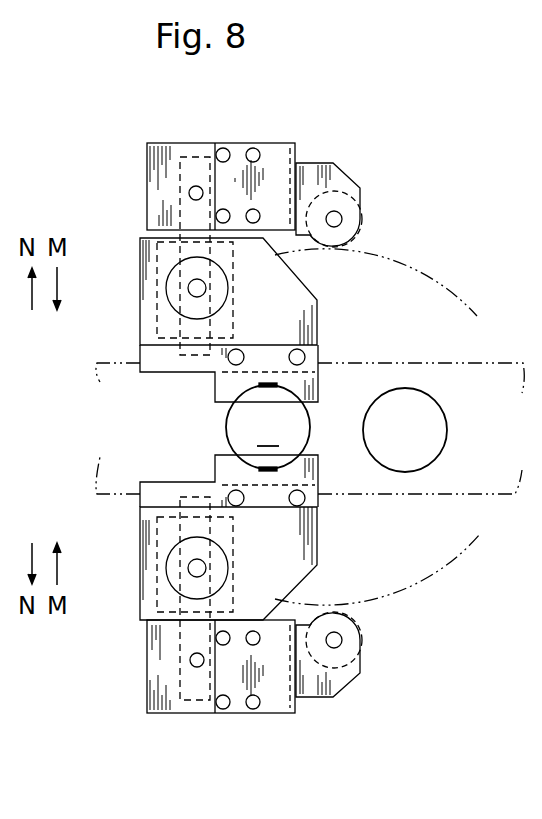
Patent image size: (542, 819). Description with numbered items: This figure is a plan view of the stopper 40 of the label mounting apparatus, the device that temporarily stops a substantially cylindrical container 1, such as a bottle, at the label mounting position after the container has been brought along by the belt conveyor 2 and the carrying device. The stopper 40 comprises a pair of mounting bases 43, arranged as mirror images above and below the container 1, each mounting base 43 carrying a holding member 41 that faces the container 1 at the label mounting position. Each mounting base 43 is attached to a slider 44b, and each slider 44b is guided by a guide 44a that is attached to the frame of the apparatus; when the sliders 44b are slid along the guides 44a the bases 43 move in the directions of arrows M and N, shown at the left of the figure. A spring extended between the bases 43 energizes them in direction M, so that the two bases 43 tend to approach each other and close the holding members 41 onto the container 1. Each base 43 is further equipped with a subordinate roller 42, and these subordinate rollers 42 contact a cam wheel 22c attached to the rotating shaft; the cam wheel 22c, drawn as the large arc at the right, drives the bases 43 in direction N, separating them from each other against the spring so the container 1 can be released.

The container 1 is at (236, 425).
The belt conveyor 2 is at (412, 360).
The cam wheel 22c is at (428, 590).
The stopper 40 is at (432, 188).
The holding member 41 is at (320, 353).
The subordinate roller 42 is at (366, 222).
The mounting base 43 is at (145, 270).
The guide 44a is at (187, 156).
The slider 44b is at (163, 245).